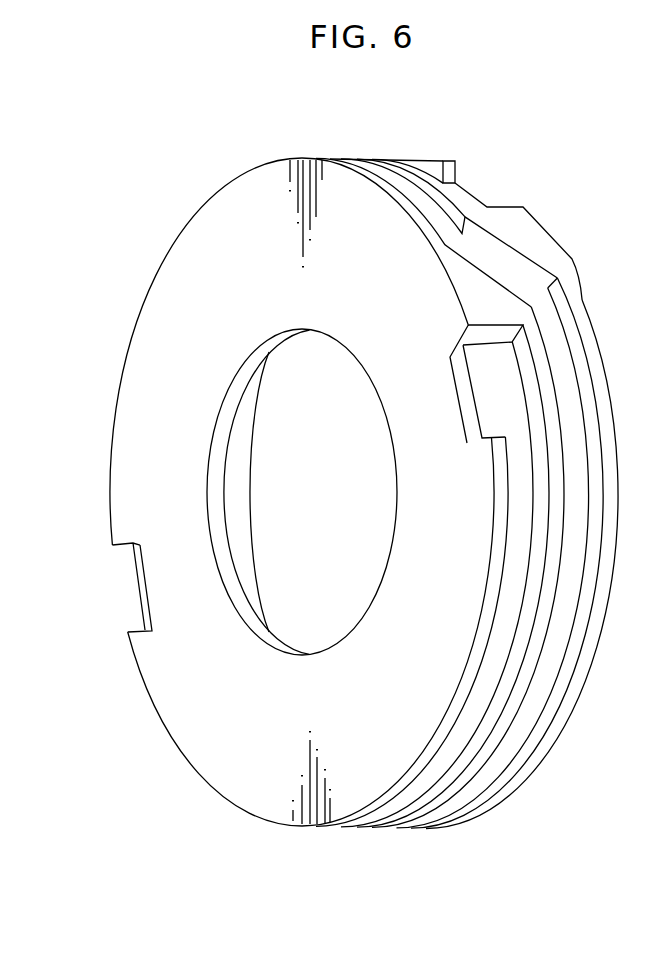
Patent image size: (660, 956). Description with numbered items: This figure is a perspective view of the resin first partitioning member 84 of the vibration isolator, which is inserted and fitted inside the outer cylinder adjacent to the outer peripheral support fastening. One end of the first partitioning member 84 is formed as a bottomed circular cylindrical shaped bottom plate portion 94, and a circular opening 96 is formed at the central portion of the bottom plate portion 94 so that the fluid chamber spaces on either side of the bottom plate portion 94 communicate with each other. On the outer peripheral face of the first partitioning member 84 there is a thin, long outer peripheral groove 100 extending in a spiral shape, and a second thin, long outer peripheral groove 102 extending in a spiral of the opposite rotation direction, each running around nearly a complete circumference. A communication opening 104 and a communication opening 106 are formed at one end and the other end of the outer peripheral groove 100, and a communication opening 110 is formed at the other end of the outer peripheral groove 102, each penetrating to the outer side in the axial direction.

The first partitioning member 84 is at (534, 148).
The bottom plate portion 94 is at (175, 442).
The opening 96 is at (332, 655).
The outer peripheral groove 100 is at (405, 800).
The outer peripheral groove 102 is at (474, 790).
The communication opening 104 is at (456, 174).
The communication opening 106 is at (467, 443).
The communication opening 110 is at (135, 634).